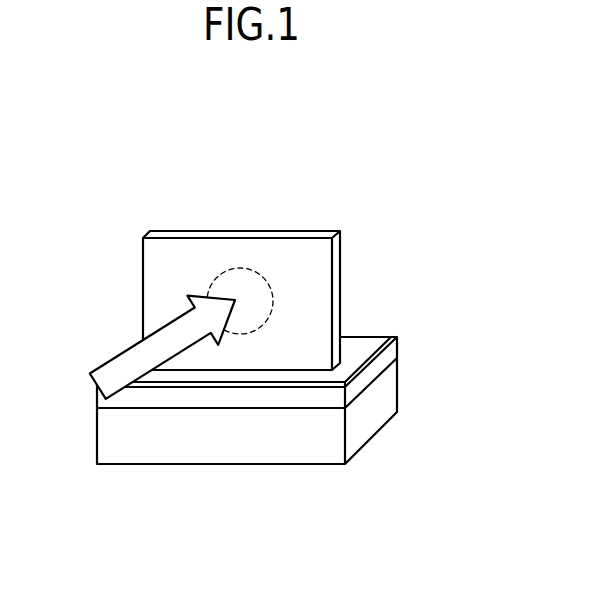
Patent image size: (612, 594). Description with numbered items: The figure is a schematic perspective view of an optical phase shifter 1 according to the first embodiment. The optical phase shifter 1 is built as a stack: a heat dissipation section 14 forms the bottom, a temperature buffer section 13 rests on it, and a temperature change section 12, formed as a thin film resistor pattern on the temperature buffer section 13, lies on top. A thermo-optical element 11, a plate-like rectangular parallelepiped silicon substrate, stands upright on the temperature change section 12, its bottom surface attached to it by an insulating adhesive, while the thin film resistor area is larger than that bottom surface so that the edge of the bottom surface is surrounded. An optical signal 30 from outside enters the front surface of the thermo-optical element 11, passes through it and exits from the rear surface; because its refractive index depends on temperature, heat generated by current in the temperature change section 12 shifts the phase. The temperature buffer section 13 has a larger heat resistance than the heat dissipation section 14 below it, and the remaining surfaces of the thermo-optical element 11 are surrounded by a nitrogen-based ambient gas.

The optical phase shifter 1 is at (240, 134).
The thermo-optical element 11 is at (300, 250).
The temperature change section 12 is at (245, 378).
The temperature buffer section 13 is at (309, 400).
The heat dissipation section 14 is at (380, 418).
The optical signal 30 is at (137, 358).